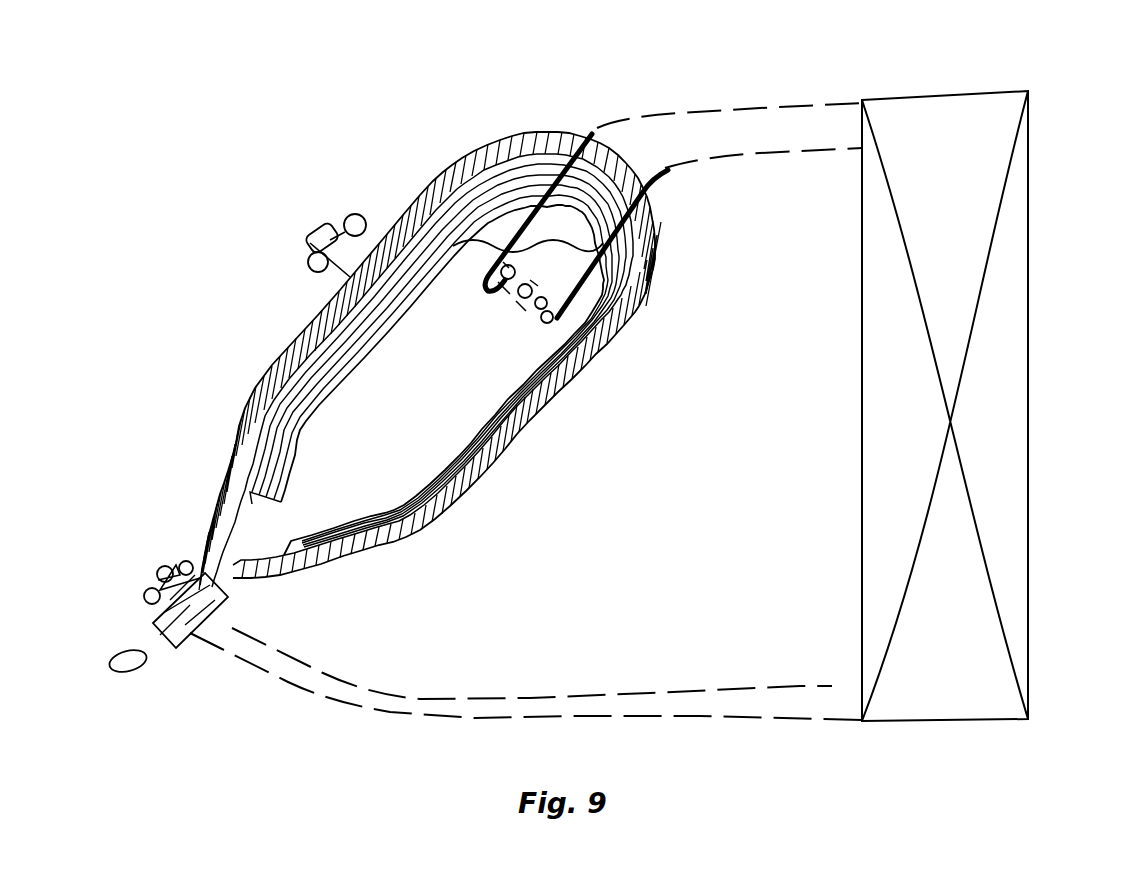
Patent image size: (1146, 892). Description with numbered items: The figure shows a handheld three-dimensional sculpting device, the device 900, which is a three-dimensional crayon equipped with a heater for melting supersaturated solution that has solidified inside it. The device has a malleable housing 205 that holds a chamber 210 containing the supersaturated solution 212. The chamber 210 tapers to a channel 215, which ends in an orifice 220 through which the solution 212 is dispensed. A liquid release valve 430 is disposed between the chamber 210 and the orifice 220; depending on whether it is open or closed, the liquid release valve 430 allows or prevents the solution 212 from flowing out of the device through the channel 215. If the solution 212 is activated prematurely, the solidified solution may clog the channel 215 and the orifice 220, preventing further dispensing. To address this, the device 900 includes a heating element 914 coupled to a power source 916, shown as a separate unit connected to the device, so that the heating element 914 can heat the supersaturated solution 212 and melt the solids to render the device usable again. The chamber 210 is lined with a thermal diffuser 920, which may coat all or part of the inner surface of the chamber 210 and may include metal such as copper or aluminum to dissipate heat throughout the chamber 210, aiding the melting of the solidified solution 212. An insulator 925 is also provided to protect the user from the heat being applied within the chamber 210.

The malleable housing 205 is at (450, 168).
The thermal diffuser 920 is at (323, 355).
The insulator 925 is at (253, 425).
The supersaturated solution 212 is at (488, 397).
The chamber 210 is at (405, 438).
The heating element 914 is at (640, 318).
The power source 916 is at (1020, 220).
The 3D device 900 is at (752, 781).
The liquid release valve 430 is at (160, 565).
The orifice 220 is at (165, 650).
The channel 215 is at (215, 580).